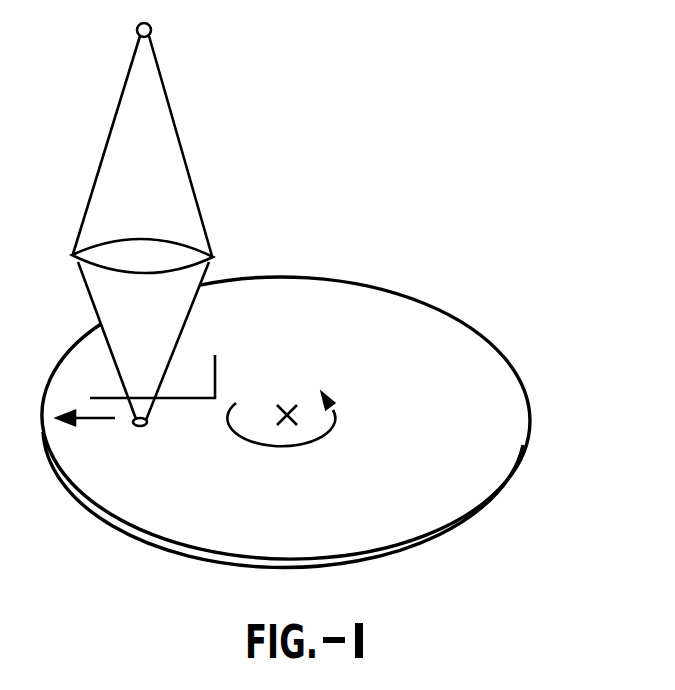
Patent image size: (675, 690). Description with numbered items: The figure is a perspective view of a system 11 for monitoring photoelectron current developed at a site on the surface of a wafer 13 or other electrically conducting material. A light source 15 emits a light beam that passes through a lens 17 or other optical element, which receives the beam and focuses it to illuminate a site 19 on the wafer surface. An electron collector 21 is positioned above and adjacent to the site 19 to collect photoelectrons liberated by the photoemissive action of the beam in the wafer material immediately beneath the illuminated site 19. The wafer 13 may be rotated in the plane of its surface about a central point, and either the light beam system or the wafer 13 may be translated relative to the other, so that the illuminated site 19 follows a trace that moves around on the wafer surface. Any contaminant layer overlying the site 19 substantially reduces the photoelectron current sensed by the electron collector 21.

The system 11 is at (230, 118).
The wafer 13 is at (500, 402).
The light source 15 is at (151, 25).
The lens 17 is at (213, 257).
The site 19 is at (140, 427).
The electron collector 21 is at (215, 378).